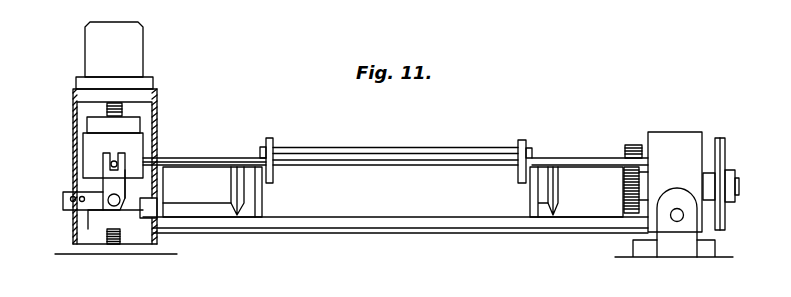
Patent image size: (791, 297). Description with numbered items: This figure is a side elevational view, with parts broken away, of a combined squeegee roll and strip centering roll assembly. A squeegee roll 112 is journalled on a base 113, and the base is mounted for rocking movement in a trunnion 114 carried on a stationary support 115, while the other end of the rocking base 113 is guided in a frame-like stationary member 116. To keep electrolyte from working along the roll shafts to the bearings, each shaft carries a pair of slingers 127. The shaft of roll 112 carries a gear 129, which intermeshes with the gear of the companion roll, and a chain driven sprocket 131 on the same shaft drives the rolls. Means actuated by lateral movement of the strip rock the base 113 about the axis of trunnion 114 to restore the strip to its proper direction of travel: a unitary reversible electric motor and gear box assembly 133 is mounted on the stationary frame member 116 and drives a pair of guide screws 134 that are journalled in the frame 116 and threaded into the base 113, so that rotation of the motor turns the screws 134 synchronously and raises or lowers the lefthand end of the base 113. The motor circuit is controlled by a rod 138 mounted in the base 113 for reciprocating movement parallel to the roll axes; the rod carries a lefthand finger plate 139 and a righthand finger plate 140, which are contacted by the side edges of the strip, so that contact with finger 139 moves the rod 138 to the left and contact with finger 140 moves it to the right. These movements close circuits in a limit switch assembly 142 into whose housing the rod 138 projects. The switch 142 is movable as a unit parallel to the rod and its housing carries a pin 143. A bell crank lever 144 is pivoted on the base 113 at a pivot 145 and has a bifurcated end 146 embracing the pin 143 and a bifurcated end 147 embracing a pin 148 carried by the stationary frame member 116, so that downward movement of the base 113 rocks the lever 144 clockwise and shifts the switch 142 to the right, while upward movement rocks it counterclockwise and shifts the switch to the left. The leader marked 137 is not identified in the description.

The squeegee roll 112 is at (441, 147).
The base 113 is at (88, 222).
The trunnion 114 is at (677, 208).
The stationary support 115 is at (684, 248).
The stationary frame member 116 is at (93, 254).
The slingers 127 is at (244, 193).
The gear 129 is at (634, 147).
The sprocket 131 is at (724, 150).
The electric motor and gear box assembly 133 is at (144, 36).
The guide screws 134 is at (122, 110).
The shaft 137 is at (250, 153).
The rod 138 is at (372, 162).
The lefthand finger plate 139 is at (275, 142).
The righthand finger plate 140 is at (522, 140).
The limit switch assembly 142 is at (139, 143).
The pin 143 is at (110, 163).
The bell crank lever 144 is at (157, 207).
The pivot 145 is at (113, 204).
The bifurcated end 146 is at (124, 169).
The bifurcated end 147 is at (66, 192).
The pin 148 is at (72, 200).